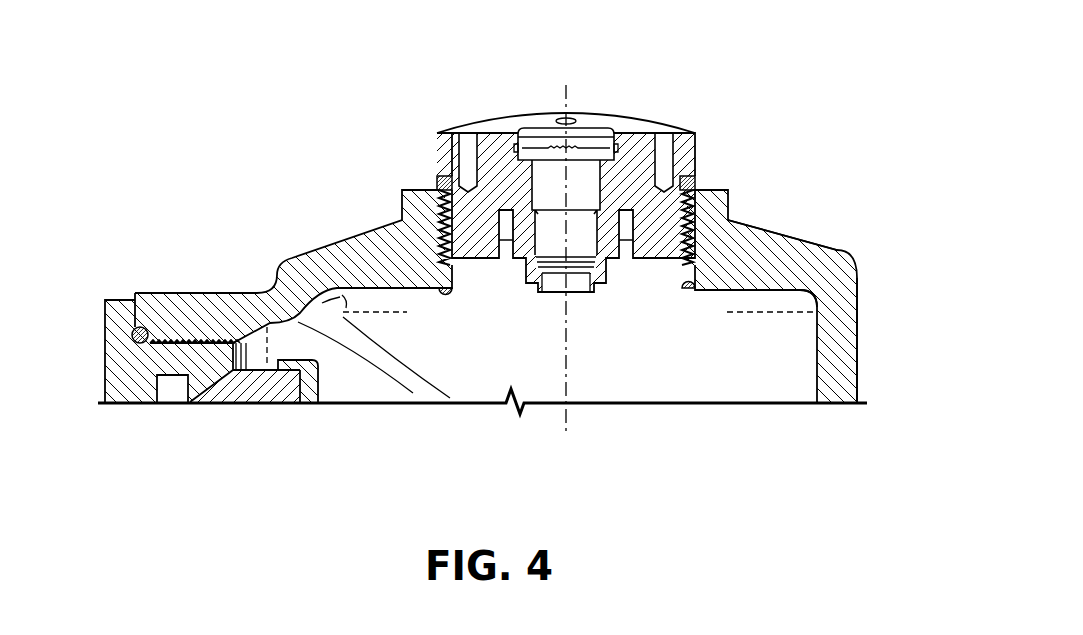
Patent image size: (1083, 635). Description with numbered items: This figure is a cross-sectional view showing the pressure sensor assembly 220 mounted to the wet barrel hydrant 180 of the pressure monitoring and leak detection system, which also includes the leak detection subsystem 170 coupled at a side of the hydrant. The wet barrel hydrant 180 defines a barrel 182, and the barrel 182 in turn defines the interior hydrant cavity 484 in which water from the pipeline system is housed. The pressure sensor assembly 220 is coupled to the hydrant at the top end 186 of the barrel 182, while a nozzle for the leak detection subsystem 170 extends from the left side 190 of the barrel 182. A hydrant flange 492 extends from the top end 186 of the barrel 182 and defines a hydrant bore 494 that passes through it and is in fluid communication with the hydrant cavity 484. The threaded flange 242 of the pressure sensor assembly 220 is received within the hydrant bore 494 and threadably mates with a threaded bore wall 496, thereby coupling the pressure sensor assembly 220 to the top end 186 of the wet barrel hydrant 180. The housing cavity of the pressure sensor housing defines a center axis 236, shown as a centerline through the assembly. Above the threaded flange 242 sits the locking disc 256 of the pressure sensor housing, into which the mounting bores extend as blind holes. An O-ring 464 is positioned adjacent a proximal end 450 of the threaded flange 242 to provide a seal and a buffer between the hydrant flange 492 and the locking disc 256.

The leak detection subsystem 170 is at (203, 435).
The wet barrel hydrant 180 is at (913, 215).
The barrel 182 is at (843, 332).
The top end 186 is at (780, 235).
The left side 190 is at (178, 315).
The pressure sensor assembly 220 is at (682, 92).
The center axis 236 is at (562, 410).
The threaded flange 242 is at (650, 238).
The locking disc 256 is at (620, 152).
The proximal end 450 is at (445, 192).
The O-ring 464 is at (440, 182).
The hydrant cavity 484 is at (633, 353).
The hydrant flange 492 is at (447, 190).
The hydrant bore 494 is at (471, 295).
The threaded bore wall 496 is at (675, 280).